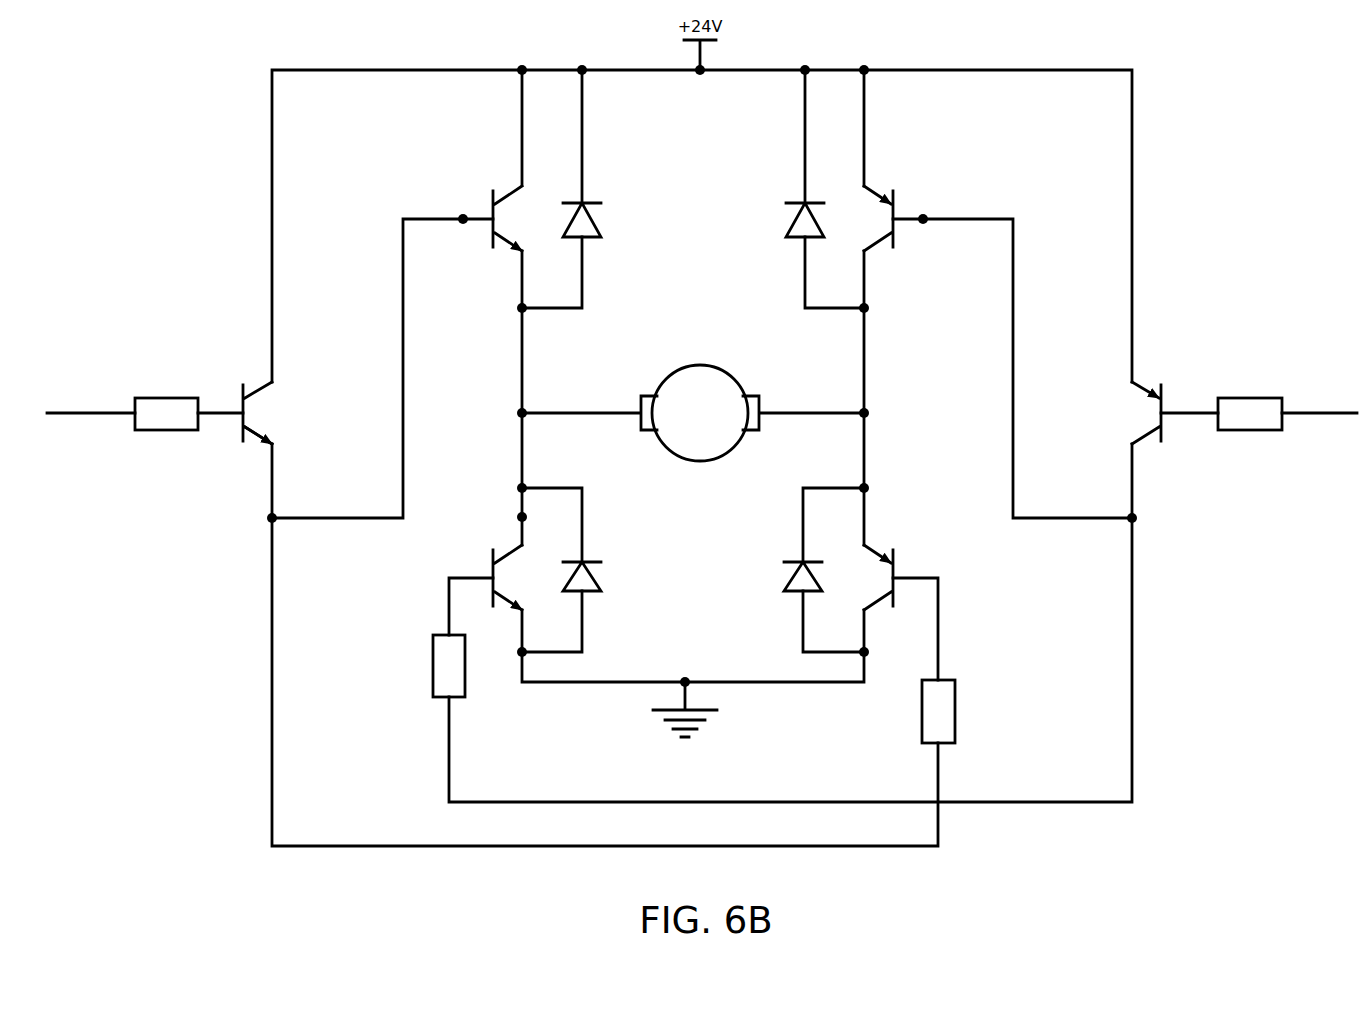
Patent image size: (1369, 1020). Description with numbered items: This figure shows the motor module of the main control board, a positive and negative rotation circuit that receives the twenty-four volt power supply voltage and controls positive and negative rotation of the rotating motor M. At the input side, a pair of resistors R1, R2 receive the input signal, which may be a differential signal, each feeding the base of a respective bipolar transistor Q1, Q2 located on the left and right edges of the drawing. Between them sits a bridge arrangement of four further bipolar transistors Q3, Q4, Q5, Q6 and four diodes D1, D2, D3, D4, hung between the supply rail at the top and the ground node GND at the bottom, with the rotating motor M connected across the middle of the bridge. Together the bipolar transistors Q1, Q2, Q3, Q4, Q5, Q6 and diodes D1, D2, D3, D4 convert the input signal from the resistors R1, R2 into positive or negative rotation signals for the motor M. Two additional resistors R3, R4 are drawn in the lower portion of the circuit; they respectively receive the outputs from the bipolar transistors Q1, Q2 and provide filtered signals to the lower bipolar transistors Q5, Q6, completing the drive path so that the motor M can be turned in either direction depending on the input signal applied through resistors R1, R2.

The resistor R1 is at (145, 403).
The resistor R2 is at (1259, 403).
The resistor R3 is at (957, 711).
The resistor R4 is at (467, 666).
The bipolar transistor Q1 is at (276, 413).
The bipolar transistor Q2 is at (1121, 413).
The bipolar transistor Q3 is at (501, 231).
The bipolar transistor Q4 is at (884, 231).
The bipolar transistor Q5 is at (501, 590).
The bipolar transistor Q6 is at (884, 590).
The diode D1 is at (599, 220).
The diode D2 is at (821, 220).
The diode D3 is at (599, 577).
The diode D4 is at (820, 577).
The rotating motor M is at (700, 413).
The ground GND is at (685, 724).